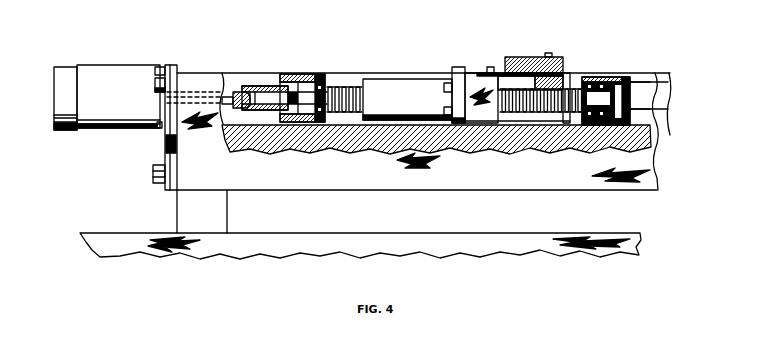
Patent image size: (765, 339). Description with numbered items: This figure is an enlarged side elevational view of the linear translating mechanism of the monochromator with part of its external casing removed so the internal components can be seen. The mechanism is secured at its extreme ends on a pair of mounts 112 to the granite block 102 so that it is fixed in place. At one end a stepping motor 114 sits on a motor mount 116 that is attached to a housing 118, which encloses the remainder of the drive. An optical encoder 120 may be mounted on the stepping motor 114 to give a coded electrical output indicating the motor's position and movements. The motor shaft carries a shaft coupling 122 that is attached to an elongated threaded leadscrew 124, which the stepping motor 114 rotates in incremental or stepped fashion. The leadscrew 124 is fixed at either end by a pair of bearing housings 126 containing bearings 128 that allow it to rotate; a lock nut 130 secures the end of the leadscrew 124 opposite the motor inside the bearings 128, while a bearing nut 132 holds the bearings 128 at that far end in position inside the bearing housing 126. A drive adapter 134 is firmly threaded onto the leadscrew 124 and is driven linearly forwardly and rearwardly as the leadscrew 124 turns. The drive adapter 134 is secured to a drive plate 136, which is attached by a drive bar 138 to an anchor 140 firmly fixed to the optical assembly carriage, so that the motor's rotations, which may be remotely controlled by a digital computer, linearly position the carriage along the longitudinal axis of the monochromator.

The granite block 102 is at (425, 243).
The mounts 112 is at (193, 213).
The stepping motor 114 is at (110, 77).
The motor mount 116 is at (173, 70).
The housing 118 is at (197, 80).
The optical encoder 120 is at (63, 73).
The shaft coupling 122 is at (250, 87).
The leadscrew 124 is at (353, 87).
The bearing housings 126 is at (297, 78).
The bearings 128 is at (327, 83).
The lock nut 130 is at (668, 109).
The bearing nut 132 is at (668, 82).
The drive adapter 134 is at (472, 75).
The drive plate 136 is at (500, 75).
The drive bar 138 is at (533, 57).
The anchor 140 is at (565, 83).